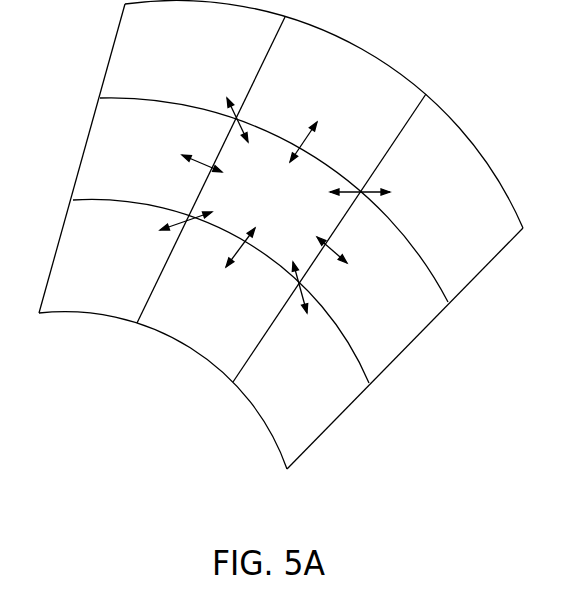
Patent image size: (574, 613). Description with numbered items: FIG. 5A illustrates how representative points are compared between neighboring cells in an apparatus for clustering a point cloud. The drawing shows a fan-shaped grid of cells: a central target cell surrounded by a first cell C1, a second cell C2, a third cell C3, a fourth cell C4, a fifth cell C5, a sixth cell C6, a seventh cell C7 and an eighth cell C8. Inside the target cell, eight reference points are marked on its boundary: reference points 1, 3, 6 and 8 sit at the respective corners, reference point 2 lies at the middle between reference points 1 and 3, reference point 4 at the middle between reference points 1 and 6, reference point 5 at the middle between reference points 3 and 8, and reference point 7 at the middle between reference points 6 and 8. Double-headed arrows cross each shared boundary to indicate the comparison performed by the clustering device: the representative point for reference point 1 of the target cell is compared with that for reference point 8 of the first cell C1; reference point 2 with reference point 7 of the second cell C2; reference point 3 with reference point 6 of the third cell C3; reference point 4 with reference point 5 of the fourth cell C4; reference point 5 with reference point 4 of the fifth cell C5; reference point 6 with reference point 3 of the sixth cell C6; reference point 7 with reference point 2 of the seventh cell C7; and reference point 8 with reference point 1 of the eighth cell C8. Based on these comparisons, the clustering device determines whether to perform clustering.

The reference point ① 1 is at (245, 134).
The reference point ② 2 is at (295, 152).
The reference point ③ 3 is at (345, 193).
The reference point ④ 4 is at (211, 174).
The reference point ⑤ 5 is at (319, 239).
The reference point ⑥ 6 is at (196, 217).
The reference point ⑦ 7 is at (249, 236).
The reference point ⑧ 8 is at (291, 275).
The first cell C1 is at (185, 55).
The second cell C2 is at (333, 102).
The third cell C3 is at (448, 200).
The fourth cell C4 is at (148, 155).
The fifth cell C5 is at (378, 288).
The sixth cell C6 is at (115, 263).
The seventh cell C7 is at (222, 303).
The eighth cell C8 is at (298, 380).